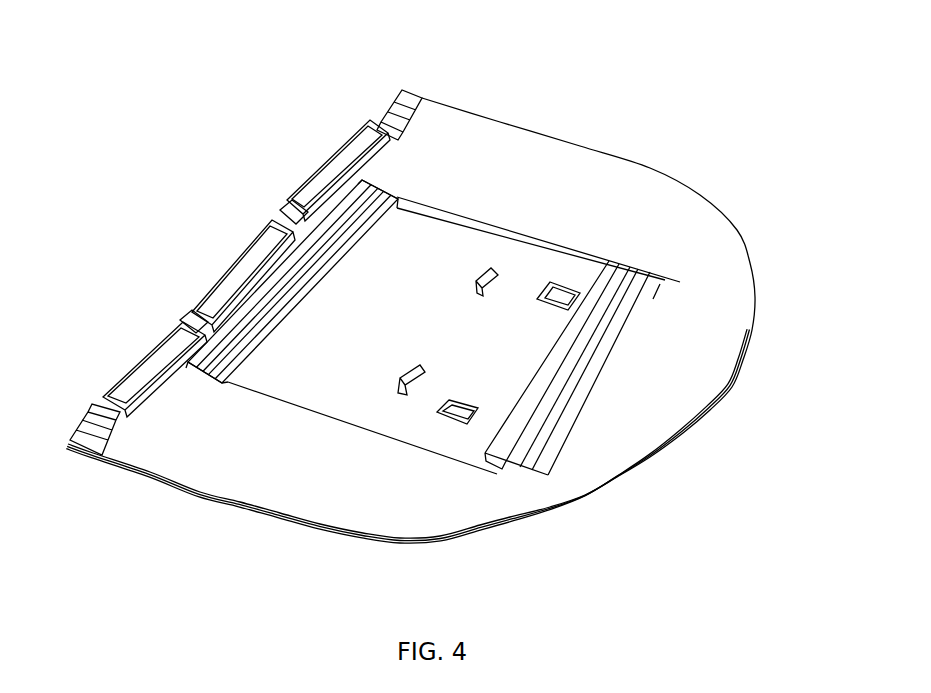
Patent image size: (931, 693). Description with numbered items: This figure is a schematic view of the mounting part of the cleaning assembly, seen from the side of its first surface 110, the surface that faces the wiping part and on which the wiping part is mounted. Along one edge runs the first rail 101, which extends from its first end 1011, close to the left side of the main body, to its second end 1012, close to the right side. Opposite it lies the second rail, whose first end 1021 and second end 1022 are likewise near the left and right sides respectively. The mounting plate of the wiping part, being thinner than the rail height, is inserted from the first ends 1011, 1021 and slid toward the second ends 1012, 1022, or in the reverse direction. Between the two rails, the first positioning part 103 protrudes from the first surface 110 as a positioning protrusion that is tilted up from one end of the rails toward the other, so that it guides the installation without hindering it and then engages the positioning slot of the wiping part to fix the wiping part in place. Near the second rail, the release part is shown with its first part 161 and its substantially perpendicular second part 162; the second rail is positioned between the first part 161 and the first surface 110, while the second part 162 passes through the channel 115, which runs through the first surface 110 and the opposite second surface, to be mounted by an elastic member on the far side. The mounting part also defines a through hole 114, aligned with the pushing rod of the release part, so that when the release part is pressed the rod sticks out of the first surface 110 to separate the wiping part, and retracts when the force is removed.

The first surface 110 is at (265, 477).
The first rail 101 is at (283, 318).
The first end of the first rail 1011 is at (372, 190).
The second end of the first rail 1012 is at (197, 368).
The first positioning part 103 is at (407, 365).
The first end of the second rail 1021 is at (680, 282).
The second end of the second rail 1022 is at (497, 474).
The through hole 114 is at (584, 300).
The first part 161 is at (560, 350).
The second part 162 is at (566, 389).
The channel 115 is at (558, 423).